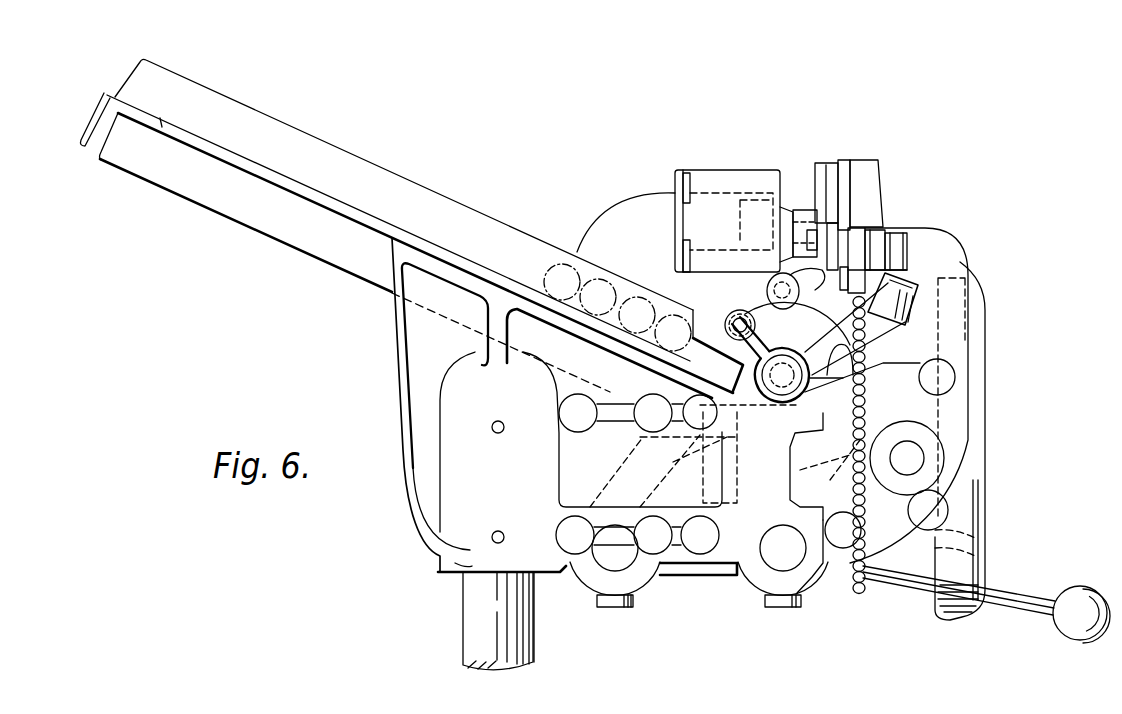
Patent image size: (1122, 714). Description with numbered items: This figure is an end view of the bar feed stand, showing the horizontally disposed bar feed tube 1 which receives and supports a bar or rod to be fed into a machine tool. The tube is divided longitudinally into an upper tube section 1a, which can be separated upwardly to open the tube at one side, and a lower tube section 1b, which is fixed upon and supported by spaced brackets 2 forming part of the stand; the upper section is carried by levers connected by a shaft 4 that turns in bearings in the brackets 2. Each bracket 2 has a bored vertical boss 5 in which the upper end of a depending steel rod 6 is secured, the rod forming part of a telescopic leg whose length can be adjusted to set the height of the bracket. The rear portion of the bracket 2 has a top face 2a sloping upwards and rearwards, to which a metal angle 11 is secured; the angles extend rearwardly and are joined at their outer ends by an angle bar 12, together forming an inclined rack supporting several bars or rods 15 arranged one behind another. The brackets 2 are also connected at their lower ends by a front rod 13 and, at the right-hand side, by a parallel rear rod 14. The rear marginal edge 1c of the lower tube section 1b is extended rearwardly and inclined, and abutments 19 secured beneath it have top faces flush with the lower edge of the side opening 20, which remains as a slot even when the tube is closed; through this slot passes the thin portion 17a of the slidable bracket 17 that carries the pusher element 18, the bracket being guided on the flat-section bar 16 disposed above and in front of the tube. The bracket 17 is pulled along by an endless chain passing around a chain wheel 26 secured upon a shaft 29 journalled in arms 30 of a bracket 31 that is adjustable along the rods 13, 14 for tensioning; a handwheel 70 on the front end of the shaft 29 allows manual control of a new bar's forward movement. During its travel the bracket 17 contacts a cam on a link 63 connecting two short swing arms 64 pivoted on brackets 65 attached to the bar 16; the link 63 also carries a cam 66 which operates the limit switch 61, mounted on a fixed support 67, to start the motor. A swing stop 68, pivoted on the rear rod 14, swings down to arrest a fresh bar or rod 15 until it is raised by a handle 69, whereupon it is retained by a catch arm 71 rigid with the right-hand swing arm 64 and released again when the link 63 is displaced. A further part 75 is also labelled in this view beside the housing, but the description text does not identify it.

The bar feed tube 1 is at (820, 393).
The upper tube section 1a is at (790, 352).
The lower tube section 1b is at (767, 393).
The rear marginal edge 1c is at (698, 322).
The bracket 2 is at (398, 438).
The top face 2a is at (436, 257).
The shaft 4 is at (908, 448).
The vertical boss 5 is at (458, 378).
The depending steel rod 6 is at (473, 625).
The metal angle 11 is at (337, 260).
The angle bar 12 is at (116, 92).
The front rod 13 is at (770, 563).
The rear rod 14 is at (637, 500).
The bar or rod 15 is at (627, 300).
The bar 16 is at (903, 228).
The slidable bracket 17 is at (765, 338).
The thin portion 17a is at (752, 340).
The pusher element 18 is at (803, 350).
The abutment 19 is at (697, 313).
The side opening 20 is at (754, 312).
The chain wheel 26 is at (862, 590).
The shaft 29 is at (703, 438).
The arm 30 is at (680, 463).
The bracket 31 is at (610, 485).
The limit switch 61 is at (792, 207).
The link 63 is at (815, 250).
The swing arm 64 is at (846, 195).
The bracket 65 is at (877, 200).
The cam 66 is at (805, 210).
The fixed support 67 is at (675, 175).
The swing stop 68 is at (757, 283).
The handle 69 is at (1064, 590).
The handwheel 70 is at (983, 524).
The catch arm 71 is at (838, 165).
The latch 75 is at (920, 302).